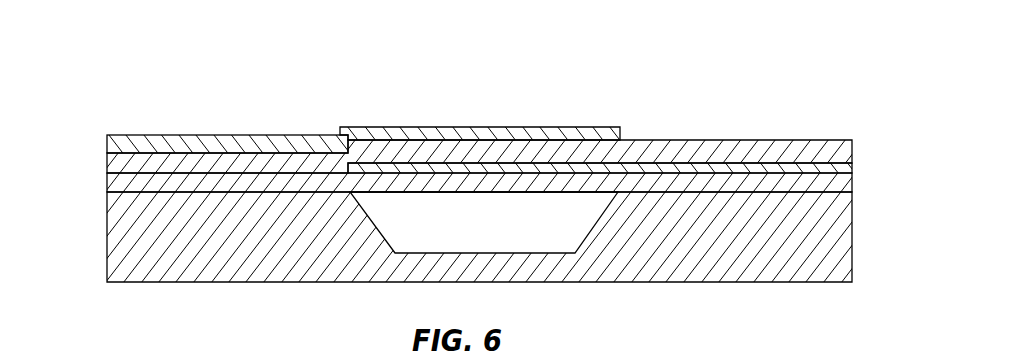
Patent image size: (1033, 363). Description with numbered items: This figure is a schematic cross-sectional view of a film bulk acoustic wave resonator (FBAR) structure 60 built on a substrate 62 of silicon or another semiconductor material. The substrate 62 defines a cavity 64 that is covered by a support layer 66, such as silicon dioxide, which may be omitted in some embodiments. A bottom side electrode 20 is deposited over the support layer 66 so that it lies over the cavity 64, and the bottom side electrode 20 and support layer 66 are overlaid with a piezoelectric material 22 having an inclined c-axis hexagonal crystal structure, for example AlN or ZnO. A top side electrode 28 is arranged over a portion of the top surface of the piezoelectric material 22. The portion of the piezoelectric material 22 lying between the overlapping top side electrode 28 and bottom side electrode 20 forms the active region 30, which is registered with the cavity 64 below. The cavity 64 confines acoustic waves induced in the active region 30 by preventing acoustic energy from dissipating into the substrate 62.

The film bulk acoustic wave resonator (FBAR) structure 60 is at (103, 68).
The substrate 62 is at (853, 230).
The cavity 64 is at (497, 231).
The support layer 66 is at (852, 183).
The bottom side electrode 20 is at (852, 169).
The piezoelectric material 22 is at (852, 148).
The top side electrode 28 is at (108, 147).
The active region 30 is at (622, 101).